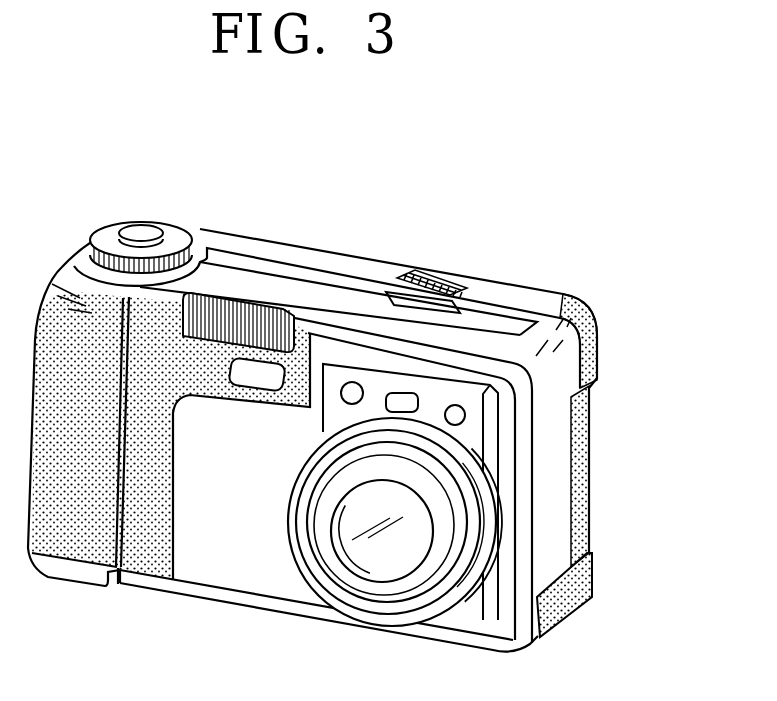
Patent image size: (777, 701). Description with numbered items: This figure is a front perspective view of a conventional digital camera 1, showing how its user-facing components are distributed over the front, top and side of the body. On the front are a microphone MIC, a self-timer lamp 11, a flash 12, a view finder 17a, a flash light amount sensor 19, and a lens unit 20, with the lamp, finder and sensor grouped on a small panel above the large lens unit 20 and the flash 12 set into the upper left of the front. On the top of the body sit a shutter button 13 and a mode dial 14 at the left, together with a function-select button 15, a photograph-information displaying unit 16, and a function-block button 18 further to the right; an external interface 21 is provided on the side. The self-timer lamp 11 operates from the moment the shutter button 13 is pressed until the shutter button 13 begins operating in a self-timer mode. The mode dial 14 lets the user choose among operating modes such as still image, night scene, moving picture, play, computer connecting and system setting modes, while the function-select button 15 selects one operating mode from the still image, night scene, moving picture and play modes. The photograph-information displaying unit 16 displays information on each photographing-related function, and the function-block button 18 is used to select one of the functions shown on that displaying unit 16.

The digital camera 1 is at (563, 186).
The self-timer lamp 11 is at (352, 388).
The flash 12 is at (232, 313).
The shutter button 13 is at (143, 233).
The mode dial 14 is at (107, 238).
The function-select button 15 is at (418, 277).
The photograph-information displaying unit 16 is at (425, 302).
The view finder 17a is at (417, 397).
The function-block button 18 is at (450, 280).
The flash light amount sensor 19 is at (467, 414).
The lens unit 20 is at (410, 536).
The external interface 21 is at (580, 584).
The microphone MIC is at (262, 373).